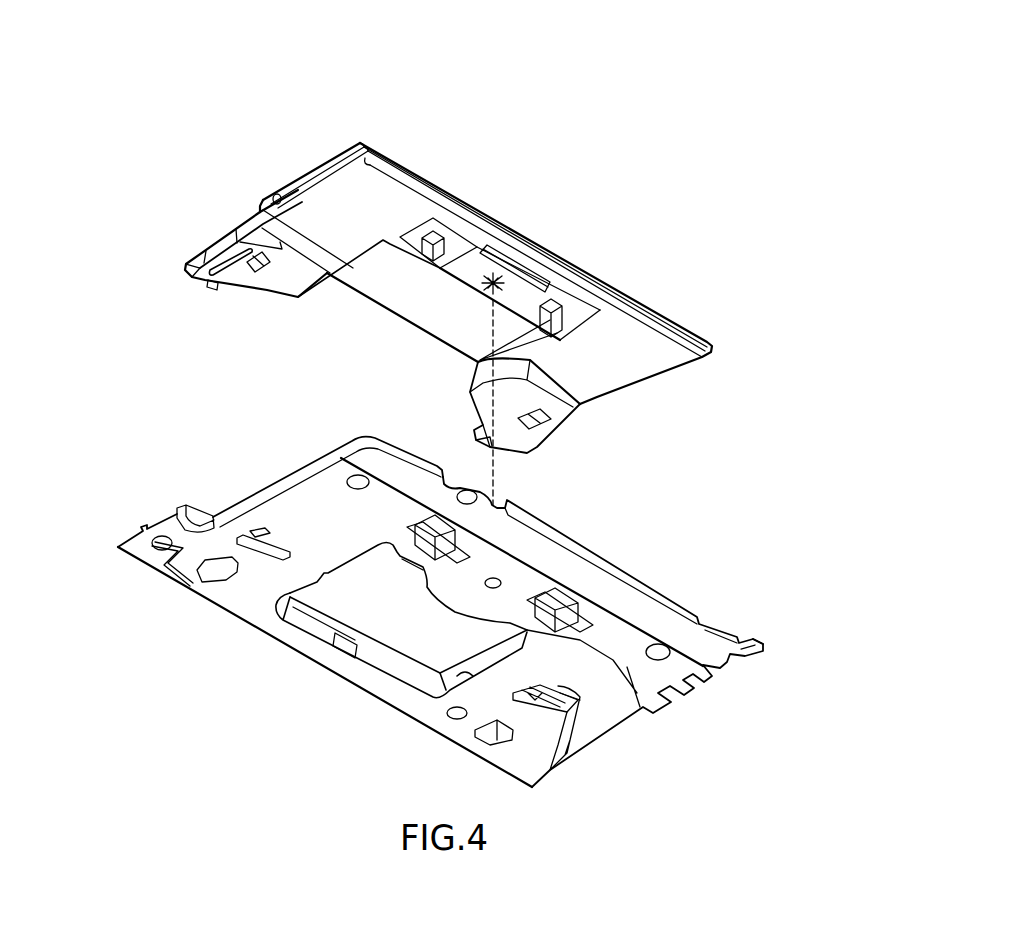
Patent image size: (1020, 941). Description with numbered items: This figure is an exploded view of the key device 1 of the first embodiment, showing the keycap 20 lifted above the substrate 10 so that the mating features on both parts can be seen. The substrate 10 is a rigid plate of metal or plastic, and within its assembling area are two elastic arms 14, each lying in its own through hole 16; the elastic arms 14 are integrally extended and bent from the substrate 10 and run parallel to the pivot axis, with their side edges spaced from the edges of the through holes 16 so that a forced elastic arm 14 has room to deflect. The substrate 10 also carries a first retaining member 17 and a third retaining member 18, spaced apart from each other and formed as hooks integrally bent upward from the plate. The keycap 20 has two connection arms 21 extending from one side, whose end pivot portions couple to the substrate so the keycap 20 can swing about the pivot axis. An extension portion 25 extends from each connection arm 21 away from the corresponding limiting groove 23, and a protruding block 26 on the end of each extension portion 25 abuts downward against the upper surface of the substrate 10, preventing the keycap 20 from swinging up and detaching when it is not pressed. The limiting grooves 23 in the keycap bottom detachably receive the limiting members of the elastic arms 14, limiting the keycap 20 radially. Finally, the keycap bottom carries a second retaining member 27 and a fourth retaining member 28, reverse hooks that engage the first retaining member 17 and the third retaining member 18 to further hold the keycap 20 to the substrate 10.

The key device 1 is at (631, 110).
The substrate 10 is at (203, 600).
The elastic arm 14 is at (252, 530).
The through hole 16 is at (277, 552).
The first retaining member 17 is at (415, 525).
The third retaining member 18 is at (597, 615).
The keycap 20 is at (300, 170).
The connection arm 21 is at (243, 237).
The limiting groove 23 is at (268, 264).
The extension portion 25 is at (192, 258).
The protruding block 26 is at (214, 290).
The second retaining member 27 is at (437, 243).
The fourth retaining member 28 is at (558, 305).